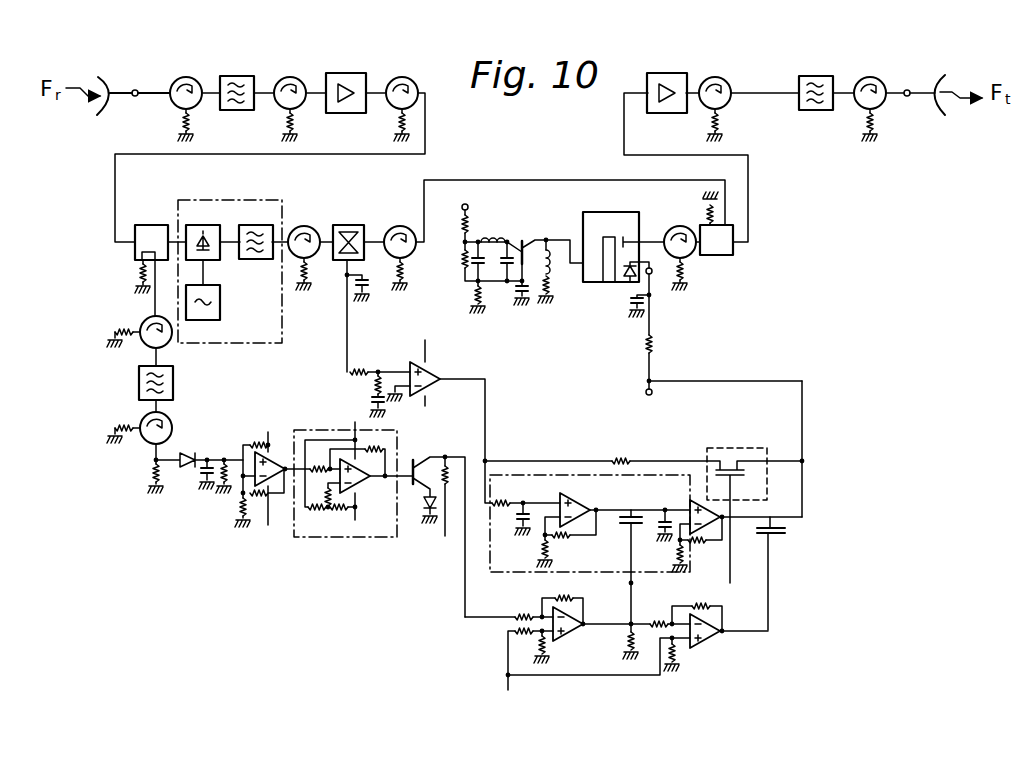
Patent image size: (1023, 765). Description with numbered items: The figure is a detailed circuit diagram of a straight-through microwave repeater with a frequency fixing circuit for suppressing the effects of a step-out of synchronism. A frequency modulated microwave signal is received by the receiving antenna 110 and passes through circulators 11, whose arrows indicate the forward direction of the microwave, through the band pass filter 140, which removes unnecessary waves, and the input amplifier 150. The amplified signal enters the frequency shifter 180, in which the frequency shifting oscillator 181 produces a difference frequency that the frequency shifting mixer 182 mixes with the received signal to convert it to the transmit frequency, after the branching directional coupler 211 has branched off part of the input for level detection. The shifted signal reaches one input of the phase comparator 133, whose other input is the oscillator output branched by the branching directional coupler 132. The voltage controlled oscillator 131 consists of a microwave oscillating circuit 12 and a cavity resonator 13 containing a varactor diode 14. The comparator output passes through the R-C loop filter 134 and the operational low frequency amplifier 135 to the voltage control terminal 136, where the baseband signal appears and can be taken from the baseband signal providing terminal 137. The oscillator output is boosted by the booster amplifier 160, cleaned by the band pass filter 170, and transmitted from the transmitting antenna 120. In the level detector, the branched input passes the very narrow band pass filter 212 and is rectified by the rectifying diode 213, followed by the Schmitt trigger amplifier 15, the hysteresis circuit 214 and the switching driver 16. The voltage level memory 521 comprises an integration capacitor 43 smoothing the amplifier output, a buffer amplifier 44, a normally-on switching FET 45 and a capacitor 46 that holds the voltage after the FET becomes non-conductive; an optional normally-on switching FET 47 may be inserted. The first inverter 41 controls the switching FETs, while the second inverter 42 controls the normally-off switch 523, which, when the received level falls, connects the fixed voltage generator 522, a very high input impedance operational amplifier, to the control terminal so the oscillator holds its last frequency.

The receiving antenna 110 is at (104, 81).
The circulator 11 is at (186, 78).
The band pass filter 140 is at (247, 75).
The input amplifier 150 is at (350, 73).
The booster amplifier 160 is at (668, 73).
The band pass filter 170 is at (818, 76).
The transmitting antenna 120 is at (942, 80).
The voltage controlled oscillator 131 is at (522, 176).
The frequency shifter 180 is at (250, 200).
The frequency shifting mixer 182 is at (214, 229).
The frequency shifting oscillator 181 is at (220, 306).
The branching directional coupler 211 is at (149, 225).
The phase comparator 133 is at (348, 225).
The microwave oscillating circuit 12 is at (510, 238).
The cavity resonator 13 is at (604, 212).
The varactor diode 14 is at (623, 286).
The voltage control terminal 136 is at (653, 275).
The branching directional coupler 132 is at (708, 257).
The baseband signal providing terminal 137 is at (653, 394).
The loop filter 134 is at (361, 366).
The low frequency amplifier 135 is at (441, 369).
The band pass filter 212 is at (139, 383).
The rectifying diode 213 is at (189, 454).
The amplifier 15 is at (254, 440).
The hysteresis circuit 214 is at (330, 428).
The switching driver 16 is at (441, 451).
The switching FET 47 is at (727, 447).
The integration capacitor 43 is at (523, 513).
The buffer amplifier 44 is at (581, 507).
The switching FET 45 is at (630, 516).
The capacitor 46 is at (659, 530).
The first inverter 41 is at (566, 606).
The second inverter 42 is at (724, 610).
The voltage level memory 521 is at (492, 573).
The fixed voltage generator 522 is at (710, 547).
The switch 523 is at (776, 536).